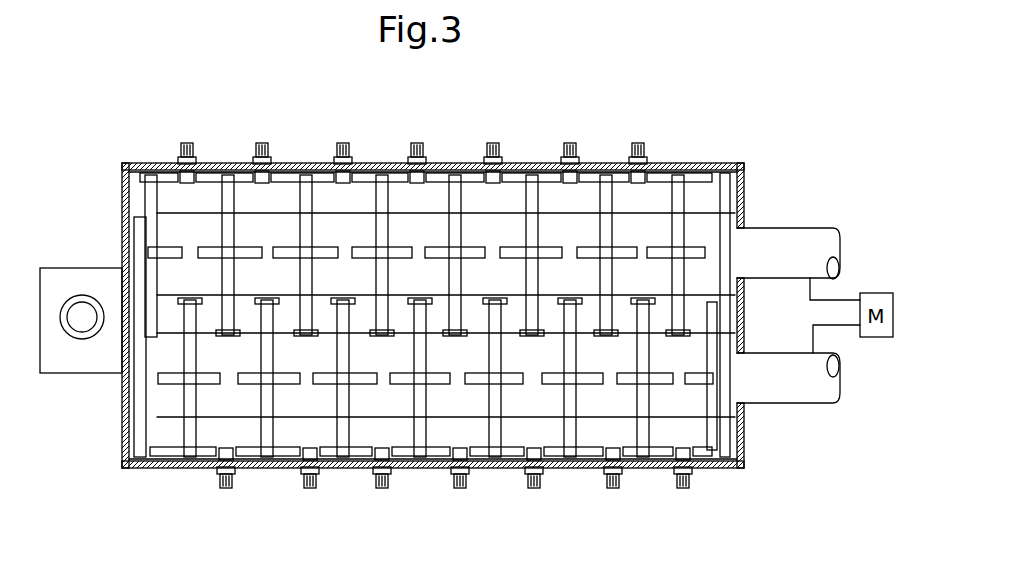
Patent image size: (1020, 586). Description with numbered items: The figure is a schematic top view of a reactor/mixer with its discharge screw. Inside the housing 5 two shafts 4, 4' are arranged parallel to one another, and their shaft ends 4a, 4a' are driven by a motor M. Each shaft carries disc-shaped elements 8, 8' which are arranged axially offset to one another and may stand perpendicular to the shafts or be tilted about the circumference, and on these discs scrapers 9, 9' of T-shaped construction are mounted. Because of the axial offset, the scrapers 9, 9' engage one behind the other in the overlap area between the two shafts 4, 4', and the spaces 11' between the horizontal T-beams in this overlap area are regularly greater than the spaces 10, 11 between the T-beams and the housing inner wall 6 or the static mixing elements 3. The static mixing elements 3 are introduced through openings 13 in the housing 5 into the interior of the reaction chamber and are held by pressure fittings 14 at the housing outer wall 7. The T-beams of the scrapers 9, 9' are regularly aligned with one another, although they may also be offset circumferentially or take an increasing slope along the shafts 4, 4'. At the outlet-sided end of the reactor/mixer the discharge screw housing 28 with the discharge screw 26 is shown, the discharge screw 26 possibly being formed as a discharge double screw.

The static mixing elements 3 is at (288, 173).
The shaft 4 is at (435, 448).
The shaft 4' is at (426, 174).
The shaft end 4a is at (788, 407).
The shaft end 4a' is at (788, 228).
The housing 5 is at (697, 163).
The housing inner wall 6 is at (732, 468).
The housing outer wall 7 is at (152, 165).
The disc-shaped elements 8 is at (411, 410).
The disc-shaped elements 8' is at (616, 213).
The scrapers 9 is at (433, 491).
The scrapers 9' is at (433, 131).
The spaces 10 is at (398, 212).
The spaces 11 is at (366, 213).
The spaces 11' is at (180, 273).
The openings 13 is at (634, 458).
The pressure fittings 14 is at (258, 145).
The discharge screw 26 is at (80, 312).
The discharge screw housing 28 is at (77, 358).